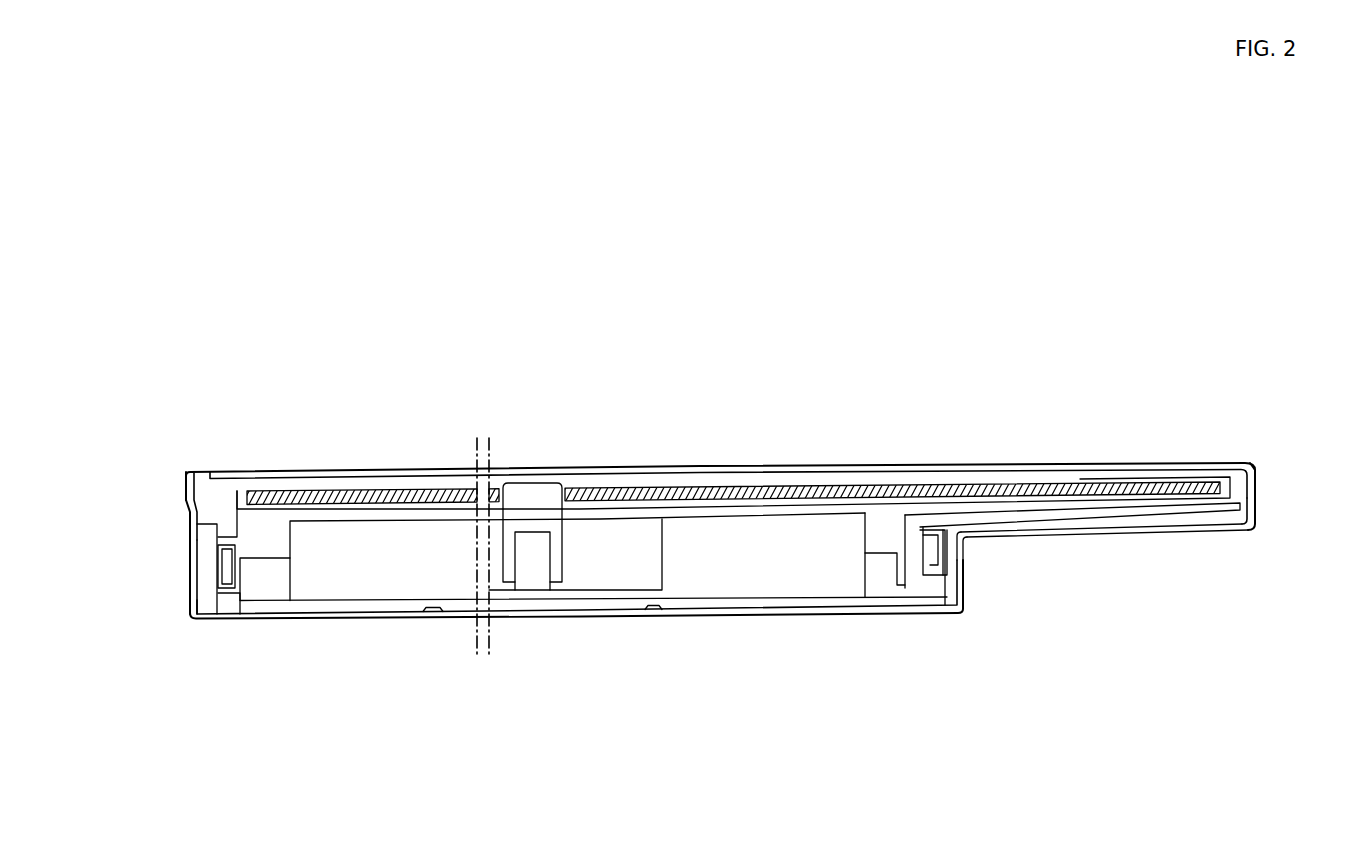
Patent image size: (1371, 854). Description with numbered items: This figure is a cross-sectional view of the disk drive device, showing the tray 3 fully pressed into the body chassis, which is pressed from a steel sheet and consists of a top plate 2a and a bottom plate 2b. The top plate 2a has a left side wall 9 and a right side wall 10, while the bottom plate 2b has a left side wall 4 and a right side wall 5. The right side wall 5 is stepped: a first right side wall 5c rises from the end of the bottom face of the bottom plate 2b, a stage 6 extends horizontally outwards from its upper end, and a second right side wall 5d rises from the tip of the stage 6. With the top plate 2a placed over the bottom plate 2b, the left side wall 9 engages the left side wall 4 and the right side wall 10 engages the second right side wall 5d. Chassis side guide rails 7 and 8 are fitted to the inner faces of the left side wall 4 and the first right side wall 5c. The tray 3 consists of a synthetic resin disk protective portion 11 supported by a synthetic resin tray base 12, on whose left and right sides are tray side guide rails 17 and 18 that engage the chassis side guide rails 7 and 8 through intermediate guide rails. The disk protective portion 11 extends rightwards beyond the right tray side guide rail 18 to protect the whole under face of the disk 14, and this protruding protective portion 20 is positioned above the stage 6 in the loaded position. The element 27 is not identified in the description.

The top plate 2a is at (1160, 463).
The bottom plate 2b is at (693, 618).
The tray 3 is at (375, 585).
The left side wall 4 is at (185, 565).
The right side wall 5 is at (1002, 598).
The first right side wall 5c is at (965, 548).
The second right side wall 5d is at (1260, 502).
The stage 6 is at (1110, 540).
The left chassis side guide rail 7 is at (204, 606).
The right chassis side guide rail 8 is at (950, 572).
The left side wall 9 is at (185, 485).
The right side wall 10 is at (1260, 470).
The disk protective portion 11 is at (757, 512).
The tray base 12 is at (820, 585).
The disk 14 is at (858, 486).
The left tray side guide rail 17 is at (237, 597).
The right tray side guide rail 18 is at (921, 567).
The protruding protective portion 20 is at (1197, 512).
The switch / button member 27 is at (608, 580).